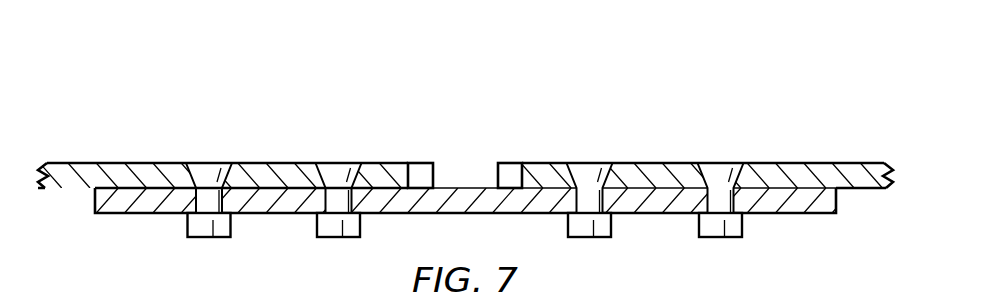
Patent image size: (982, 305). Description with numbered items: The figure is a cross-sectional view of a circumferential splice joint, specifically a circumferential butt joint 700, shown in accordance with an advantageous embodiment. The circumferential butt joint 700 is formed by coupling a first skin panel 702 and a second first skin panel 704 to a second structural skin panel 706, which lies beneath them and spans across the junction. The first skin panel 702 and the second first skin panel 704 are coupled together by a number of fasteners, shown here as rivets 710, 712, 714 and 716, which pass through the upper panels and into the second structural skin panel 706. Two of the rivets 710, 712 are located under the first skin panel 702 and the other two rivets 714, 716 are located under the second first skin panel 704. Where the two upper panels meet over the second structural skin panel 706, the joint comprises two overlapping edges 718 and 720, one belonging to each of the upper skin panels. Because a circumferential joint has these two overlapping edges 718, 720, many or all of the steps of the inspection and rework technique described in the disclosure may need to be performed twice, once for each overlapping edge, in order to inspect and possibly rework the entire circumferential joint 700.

The circumferential butt joint 700 is at (328, 115).
The first skin panel 702 is at (139, 163).
The second first skin panel 704 is at (650, 163).
The second structural skin panel 706 is at (463, 188).
The rivet 710 is at (187, 228).
The rivet 712 is at (318, 228).
The rivet 714 is at (611, 226).
The rivet 716 is at (742, 226).
The overlapping edge 718 is at (423, 163).
The overlapping edge 720 is at (506, 163).